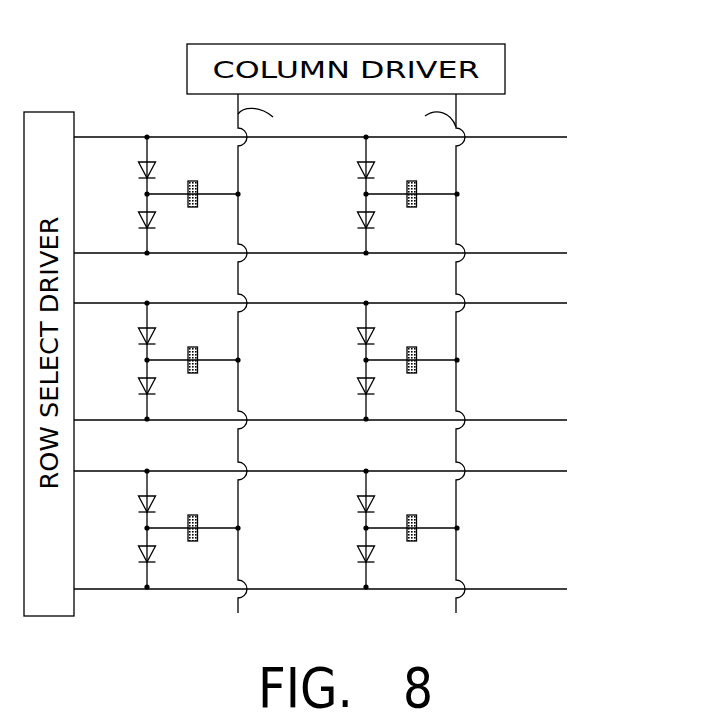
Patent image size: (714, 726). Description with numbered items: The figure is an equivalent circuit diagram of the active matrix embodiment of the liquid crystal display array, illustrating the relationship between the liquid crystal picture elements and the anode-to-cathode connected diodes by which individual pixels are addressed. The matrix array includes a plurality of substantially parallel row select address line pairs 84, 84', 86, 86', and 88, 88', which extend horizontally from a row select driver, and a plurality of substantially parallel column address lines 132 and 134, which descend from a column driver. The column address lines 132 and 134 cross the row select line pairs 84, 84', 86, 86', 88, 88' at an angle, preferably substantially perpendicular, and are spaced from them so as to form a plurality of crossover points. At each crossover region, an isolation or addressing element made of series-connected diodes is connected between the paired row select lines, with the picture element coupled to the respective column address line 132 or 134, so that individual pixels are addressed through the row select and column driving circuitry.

The row select address line 84 is at (356, 148).
The row select address line 84' is at (359, 232).
The row select address line 86 is at (356, 314).
The row select address line 86' is at (359, 398).
The row select address line 88 is at (356, 482).
The row select address line 88' is at (359, 567).
The column address line 132 is at (238, 160).
The column address line 134 is at (456, 177).